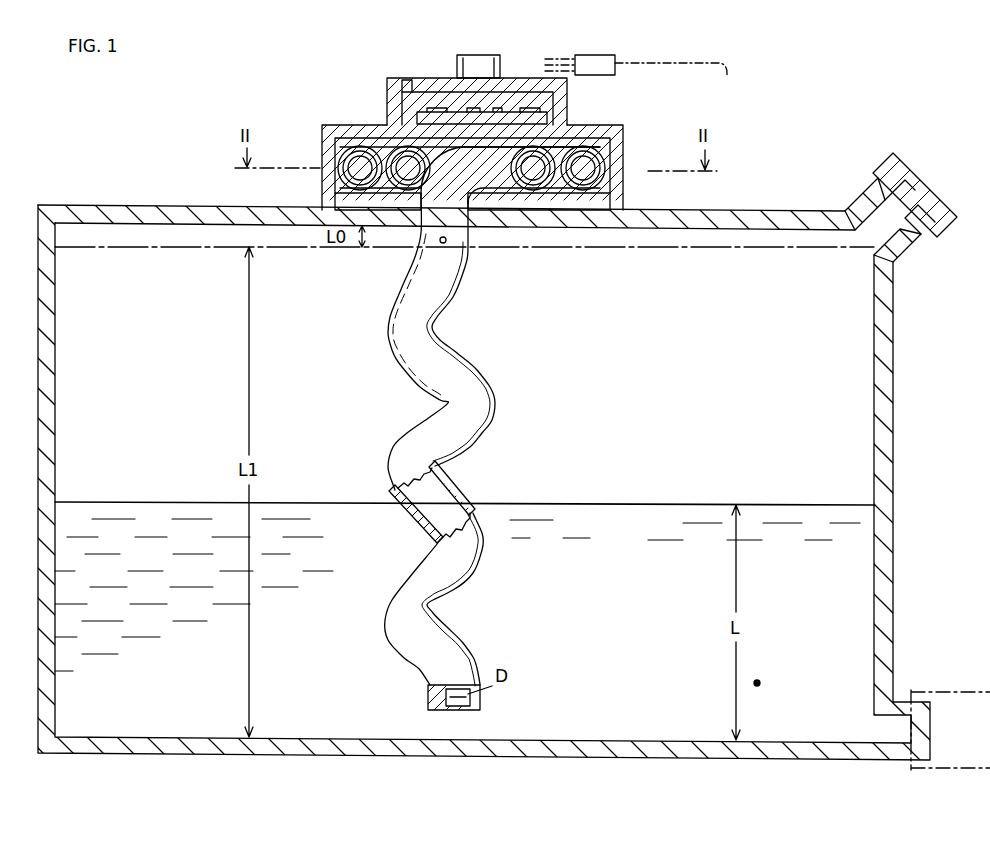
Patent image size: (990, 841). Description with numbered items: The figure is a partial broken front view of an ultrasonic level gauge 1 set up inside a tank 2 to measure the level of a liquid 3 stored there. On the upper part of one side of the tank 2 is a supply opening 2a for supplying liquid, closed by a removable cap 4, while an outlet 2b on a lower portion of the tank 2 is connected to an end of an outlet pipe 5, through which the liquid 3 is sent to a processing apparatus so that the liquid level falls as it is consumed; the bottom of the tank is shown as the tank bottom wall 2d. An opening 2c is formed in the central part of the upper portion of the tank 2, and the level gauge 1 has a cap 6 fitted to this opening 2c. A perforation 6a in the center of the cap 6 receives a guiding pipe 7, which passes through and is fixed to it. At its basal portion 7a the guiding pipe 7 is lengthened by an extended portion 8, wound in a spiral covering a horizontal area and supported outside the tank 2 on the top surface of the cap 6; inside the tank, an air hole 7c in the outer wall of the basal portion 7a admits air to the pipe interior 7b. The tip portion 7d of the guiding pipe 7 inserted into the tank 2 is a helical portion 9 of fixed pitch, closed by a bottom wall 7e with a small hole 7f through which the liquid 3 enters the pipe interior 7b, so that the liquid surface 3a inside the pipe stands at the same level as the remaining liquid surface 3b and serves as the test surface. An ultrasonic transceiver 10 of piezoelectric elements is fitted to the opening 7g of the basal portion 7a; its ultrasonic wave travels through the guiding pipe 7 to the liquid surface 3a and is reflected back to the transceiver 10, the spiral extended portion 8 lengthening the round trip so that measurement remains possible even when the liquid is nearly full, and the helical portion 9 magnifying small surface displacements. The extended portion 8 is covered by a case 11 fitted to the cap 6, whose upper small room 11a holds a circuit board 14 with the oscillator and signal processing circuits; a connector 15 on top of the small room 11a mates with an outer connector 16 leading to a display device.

The ultrasonic level gauge 1 is at (321, 136).
The tank 2 is at (894, 371).
The supply opening 2a is at (907, 236).
The outlet 2b is at (918, 757).
The opening 2c is at (381, 221).
The tank bottom wall 2d is at (572, 756).
The liquid 3 is at (862, 583).
The liquid surface 3a is at (420, 250).
The liquid surface 3b is at (200, 247).
The removable cap 4 is at (916, 190).
The outlet pipe 5 is at (942, 690).
The cap 6 is at (604, 200).
The perforation 6a is at (462, 229).
The guiding pipe 7 is at (458, 293).
The basal portion 7a is at (512, 222).
The pipe interior 7b is at (441, 473).
The air hole 7c is at (444, 244).
The tip portion 7d is at (486, 374).
The bottom wall 7e is at (443, 712).
The small hole 7f is at (455, 712).
The opening 7g is at (358, 160).
The extended portion 8 is at (609, 131).
The helical portion 9 is at (398, 440).
The ultrasonic transceiver 10 is at (349, 172).
The case 11 is at (588, 127).
The small room 11a is at (411, 92).
The circuit board 14 is at (415, 112).
The connector 15 is at (498, 57).
The connector 16 is at (616, 56).